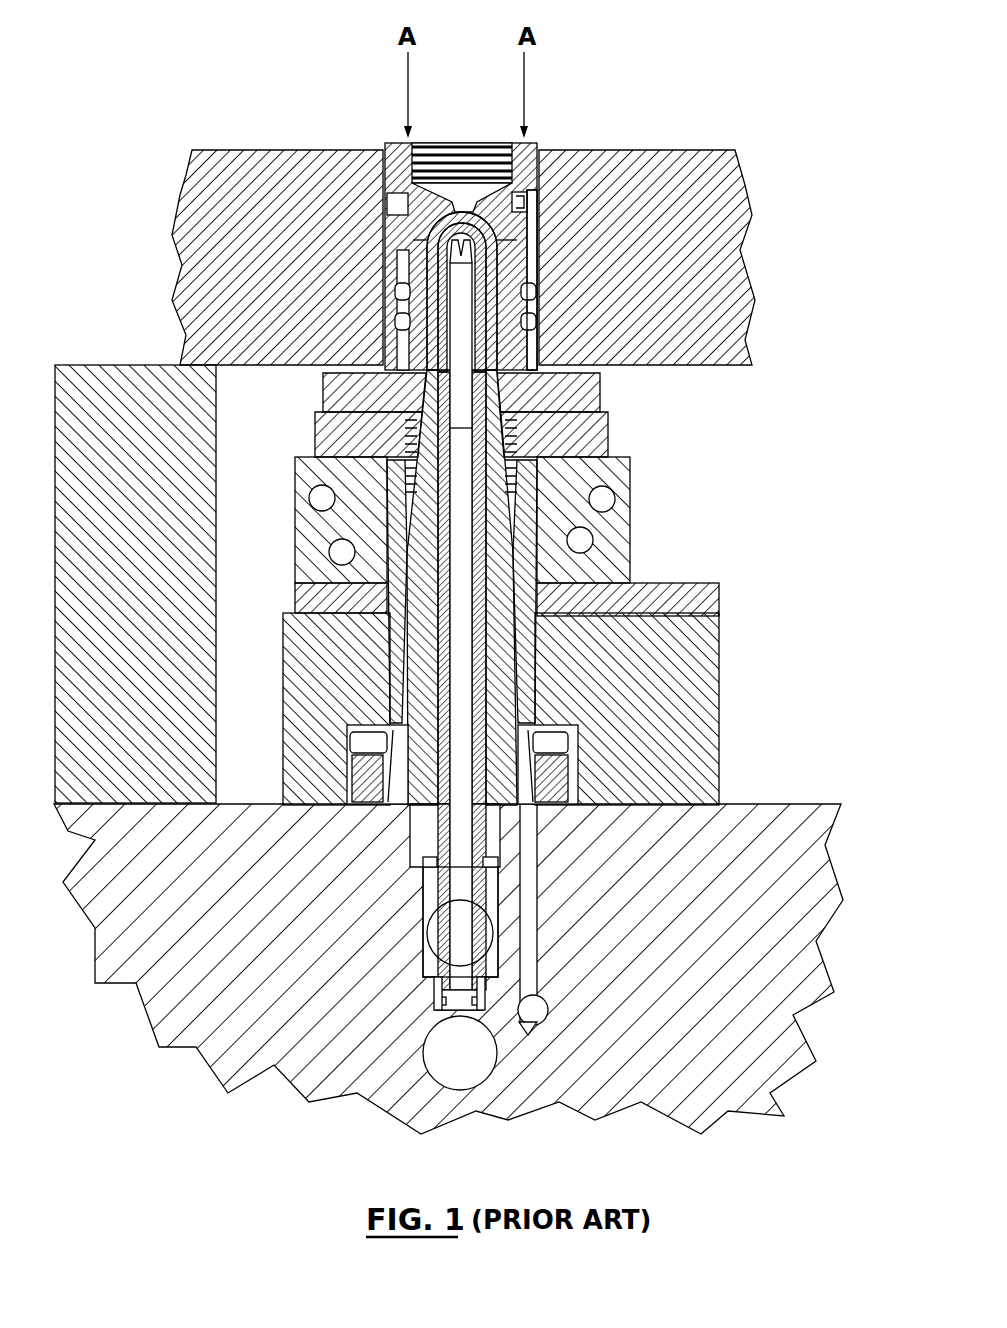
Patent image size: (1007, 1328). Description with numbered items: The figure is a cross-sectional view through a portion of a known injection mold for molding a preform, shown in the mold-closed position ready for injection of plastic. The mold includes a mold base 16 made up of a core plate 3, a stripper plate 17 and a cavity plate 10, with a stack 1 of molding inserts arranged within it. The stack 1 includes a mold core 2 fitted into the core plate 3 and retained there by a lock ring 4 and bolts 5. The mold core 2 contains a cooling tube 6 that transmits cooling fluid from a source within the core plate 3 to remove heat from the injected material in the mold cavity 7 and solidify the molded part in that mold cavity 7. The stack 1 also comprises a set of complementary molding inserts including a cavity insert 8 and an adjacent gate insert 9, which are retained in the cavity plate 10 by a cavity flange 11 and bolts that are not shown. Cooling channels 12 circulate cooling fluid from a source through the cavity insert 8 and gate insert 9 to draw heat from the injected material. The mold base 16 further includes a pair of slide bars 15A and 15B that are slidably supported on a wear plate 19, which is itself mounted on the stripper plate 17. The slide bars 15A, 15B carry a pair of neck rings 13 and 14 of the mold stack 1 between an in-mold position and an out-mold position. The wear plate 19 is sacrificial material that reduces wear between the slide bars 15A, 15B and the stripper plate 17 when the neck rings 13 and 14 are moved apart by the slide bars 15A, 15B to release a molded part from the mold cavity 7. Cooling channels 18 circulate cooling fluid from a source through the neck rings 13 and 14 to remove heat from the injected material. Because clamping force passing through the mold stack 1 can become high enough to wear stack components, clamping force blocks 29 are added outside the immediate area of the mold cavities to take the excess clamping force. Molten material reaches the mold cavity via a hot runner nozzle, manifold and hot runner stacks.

The stack 1 is at (452, 126).
The mold core 2 is at (486, 320).
The core plate 3 is at (782, 808).
The lock ring 4 is at (537, 660).
The bolts 5 is at (377, 750).
The cooling tube 6 is at (505, 900).
The mold cavity 7 is at (494, 358).
The cavity insert 8 is at (526, 252).
The gate insert 9 is at (543, 150).
The cavity plate 10 is at (700, 232).
The cavity flange 11 is at (600, 395).
The cooling channels 12 is at (388, 212).
The neck ring 13 is at (318, 442).
The neck ring 14 is at (610, 441).
The slide bar 15A is at (296, 500).
The slide bar 15B is at (632, 470).
The mold base 16 is at (554, 545).
The stripper plate 17 is at (690, 699).
The cooling channels 18 is at (345, 405).
The wear plate 19 is at (670, 592).
The clamping force blocks 29 is at (123, 418).